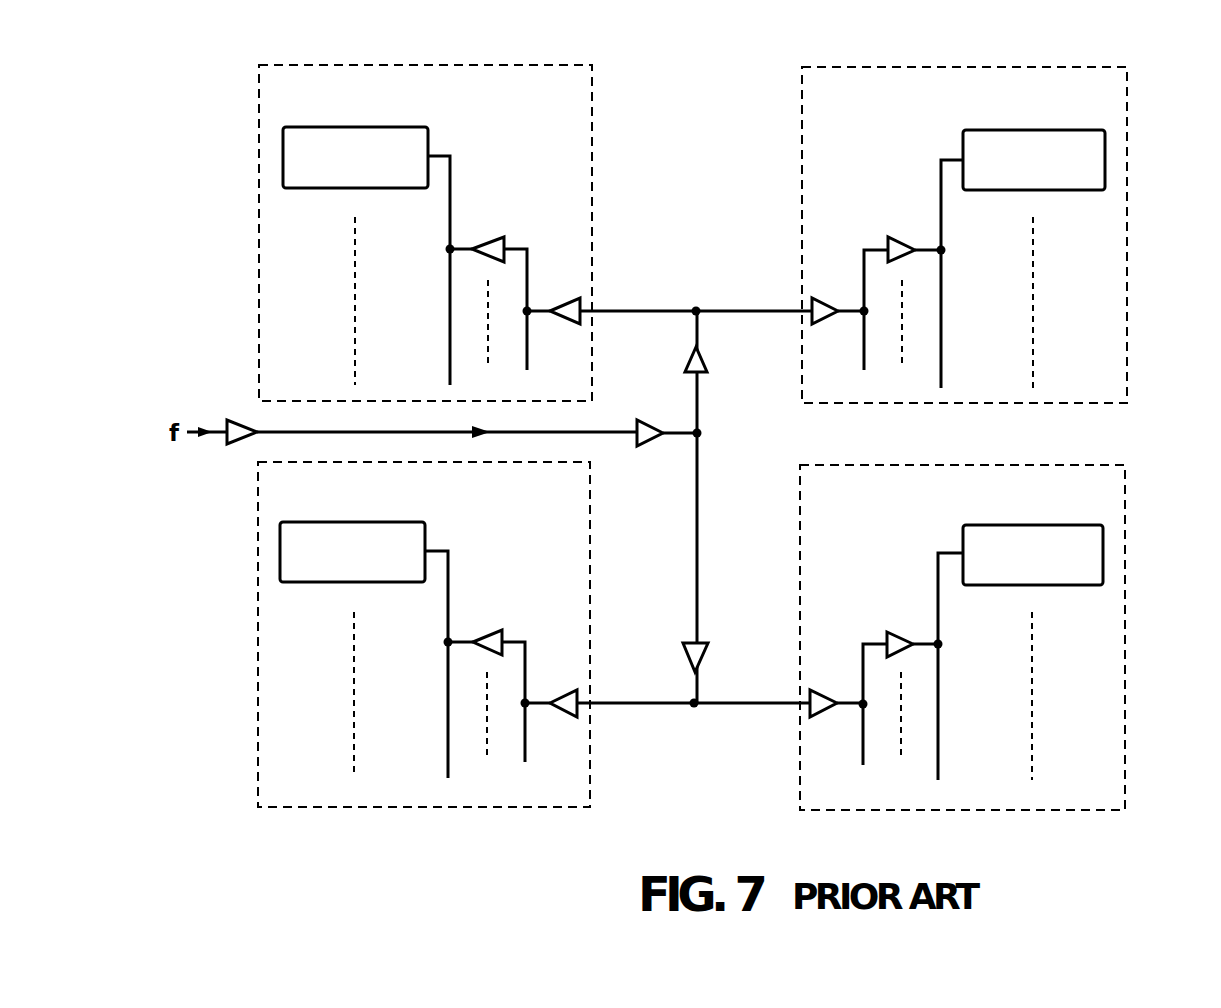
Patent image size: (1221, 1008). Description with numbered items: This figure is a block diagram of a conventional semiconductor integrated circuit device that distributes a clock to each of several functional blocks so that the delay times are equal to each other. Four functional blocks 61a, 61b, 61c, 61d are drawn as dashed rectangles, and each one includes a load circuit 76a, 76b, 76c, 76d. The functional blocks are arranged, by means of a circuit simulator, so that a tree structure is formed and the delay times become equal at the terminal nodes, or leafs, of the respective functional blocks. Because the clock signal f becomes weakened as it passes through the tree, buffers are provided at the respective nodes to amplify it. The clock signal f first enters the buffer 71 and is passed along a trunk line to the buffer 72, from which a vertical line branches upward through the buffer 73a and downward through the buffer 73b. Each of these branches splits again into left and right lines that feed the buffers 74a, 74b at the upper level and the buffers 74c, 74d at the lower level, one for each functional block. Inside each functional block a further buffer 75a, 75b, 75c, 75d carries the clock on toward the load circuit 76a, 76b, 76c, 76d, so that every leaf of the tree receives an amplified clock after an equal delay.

The functional block 61a is at (594, 180).
The functional block 61b is at (1129, 188).
The functional block 61c is at (594, 578).
The functional block 61d is at (1128, 583).
The buffer 71 is at (242, 420).
The buffer 72 is at (655, 442).
The buffer 73a is at (708, 362).
The buffer 73b is at (709, 648).
The buffer 74a is at (578, 300).
The buffer 74b is at (810, 299).
The buffer 74c is at (578, 712).
The buffer 74d is at (808, 717).
The buffer 75a is at (505, 237).
The buffer 75b is at (888, 236).
The buffer 75c is at (503, 630).
The buffer 75d is at (888, 631).
The load circuit 76a is at (400, 126).
The load circuit 76b is at (1058, 129).
The load circuit 76c is at (398, 521).
The load circuit 76d is at (1055, 525).